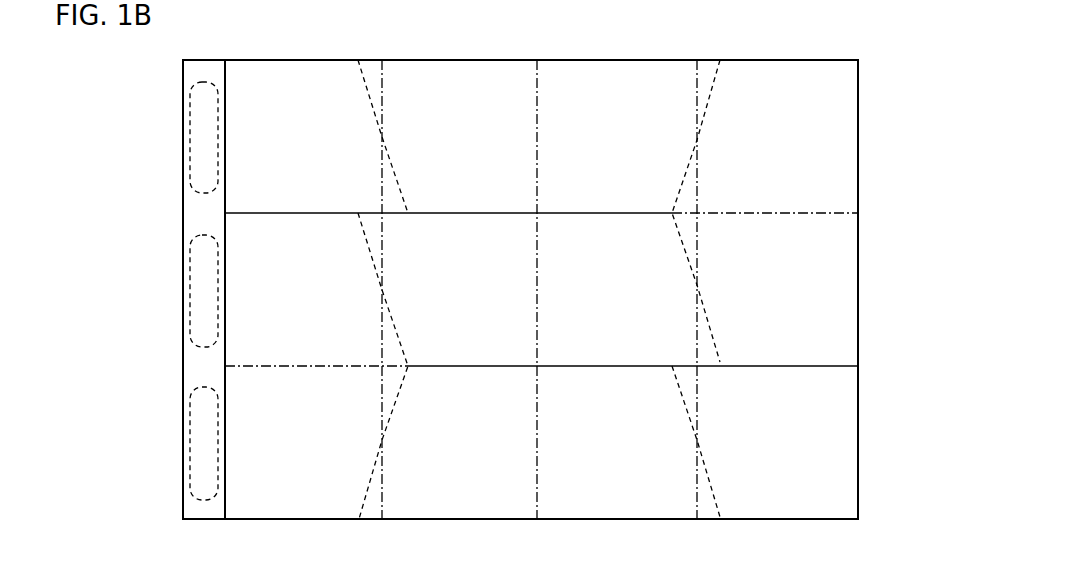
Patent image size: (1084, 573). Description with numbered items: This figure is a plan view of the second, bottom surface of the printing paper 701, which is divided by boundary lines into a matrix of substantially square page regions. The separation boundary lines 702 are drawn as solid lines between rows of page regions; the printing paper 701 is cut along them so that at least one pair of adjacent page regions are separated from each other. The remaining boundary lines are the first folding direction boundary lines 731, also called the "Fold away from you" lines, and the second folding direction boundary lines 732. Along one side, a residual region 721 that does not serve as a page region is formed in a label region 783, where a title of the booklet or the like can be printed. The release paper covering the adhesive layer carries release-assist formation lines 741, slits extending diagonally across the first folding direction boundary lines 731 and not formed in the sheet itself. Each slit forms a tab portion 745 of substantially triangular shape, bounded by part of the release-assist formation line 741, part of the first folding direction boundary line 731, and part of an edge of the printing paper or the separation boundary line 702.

The printing paper 701 is at (842, 46).
The separation boundary lines 702 is at (225, 89).
The residual region 721 is at (173, 259).
The first folding direction boundary lines 731 is at (383, 88).
The second folding direction boundary lines 732 is at (538, 88).
The release-assist formation lines 741 is at (716, 80).
The tab portion 745 is at (703, 79).
The label region 783 is at (197, 100).